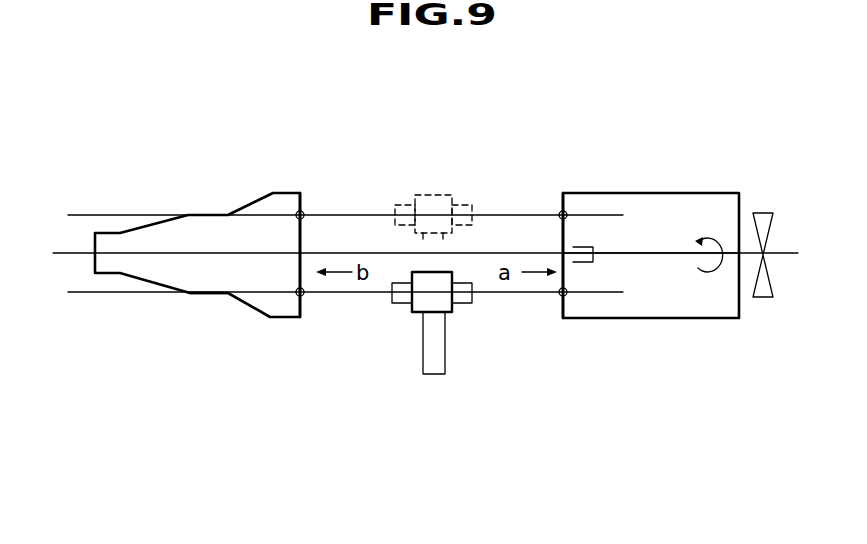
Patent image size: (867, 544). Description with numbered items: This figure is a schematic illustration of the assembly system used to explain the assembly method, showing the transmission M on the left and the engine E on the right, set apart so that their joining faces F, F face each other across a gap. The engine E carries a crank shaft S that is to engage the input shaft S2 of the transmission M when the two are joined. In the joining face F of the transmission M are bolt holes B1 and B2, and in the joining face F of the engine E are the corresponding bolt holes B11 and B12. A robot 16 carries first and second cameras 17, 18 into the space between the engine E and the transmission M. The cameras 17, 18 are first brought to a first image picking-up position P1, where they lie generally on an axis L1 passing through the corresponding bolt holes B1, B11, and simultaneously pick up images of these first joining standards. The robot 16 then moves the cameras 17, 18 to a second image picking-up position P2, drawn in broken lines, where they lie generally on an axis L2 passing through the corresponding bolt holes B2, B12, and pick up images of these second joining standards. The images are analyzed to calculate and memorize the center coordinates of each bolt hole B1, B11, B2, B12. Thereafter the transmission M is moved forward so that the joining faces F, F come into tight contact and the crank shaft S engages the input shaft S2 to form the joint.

The transmission M is at (208, 222).
The engine E is at (680, 199).
The crank shaft S is at (670, 256).
The joining face F is at (303, 240).
The bolt hole B1 is at (297, 296).
The bolt hole B2 is at (298, 211).
The bolt hole B11 is at (565, 295).
The bolt hole B12 is at (566, 212).
The input shaft S2 is at (255, 255).
The first image picking-up position P1 is at (438, 347).
The second image picking-up position P2 is at (420, 190).
The axis L1 is at (333, 293).
The axis L2 is at (333, 215).
The robot 16 is at (442, 360).
The first camera 17 is at (397, 306).
The second camera 18 is at (465, 306).